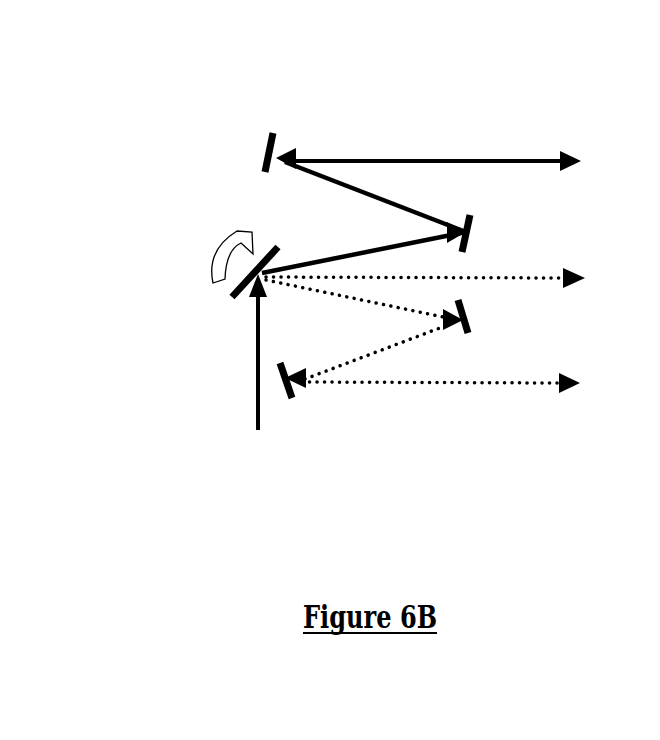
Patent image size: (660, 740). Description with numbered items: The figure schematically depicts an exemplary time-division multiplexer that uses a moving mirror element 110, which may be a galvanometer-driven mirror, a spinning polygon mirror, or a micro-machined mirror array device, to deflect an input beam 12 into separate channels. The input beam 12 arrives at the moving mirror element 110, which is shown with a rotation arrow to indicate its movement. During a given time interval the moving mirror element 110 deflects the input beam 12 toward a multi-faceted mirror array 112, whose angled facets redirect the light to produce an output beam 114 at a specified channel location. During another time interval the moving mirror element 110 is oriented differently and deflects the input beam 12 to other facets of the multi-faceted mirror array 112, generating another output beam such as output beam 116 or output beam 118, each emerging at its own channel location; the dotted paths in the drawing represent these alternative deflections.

The input beam 12 is at (253, 368).
The moving mirror element 110 is at (233, 295).
The multi-faceted mirror array 112 is at (288, 368).
The output beam 114 is at (533, 163).
The output beam 116 is at (528, 272).
The output beam 118 is at (527, 382).